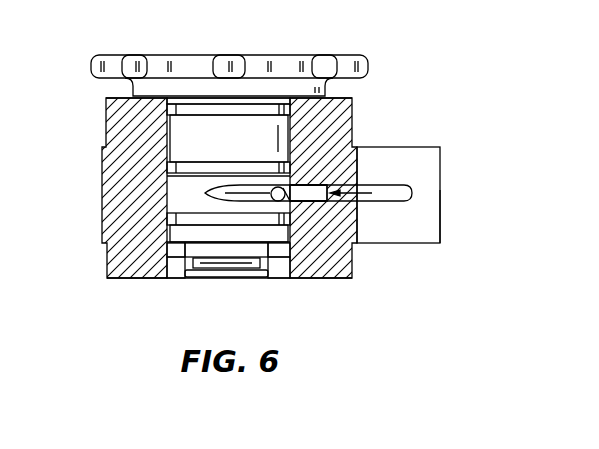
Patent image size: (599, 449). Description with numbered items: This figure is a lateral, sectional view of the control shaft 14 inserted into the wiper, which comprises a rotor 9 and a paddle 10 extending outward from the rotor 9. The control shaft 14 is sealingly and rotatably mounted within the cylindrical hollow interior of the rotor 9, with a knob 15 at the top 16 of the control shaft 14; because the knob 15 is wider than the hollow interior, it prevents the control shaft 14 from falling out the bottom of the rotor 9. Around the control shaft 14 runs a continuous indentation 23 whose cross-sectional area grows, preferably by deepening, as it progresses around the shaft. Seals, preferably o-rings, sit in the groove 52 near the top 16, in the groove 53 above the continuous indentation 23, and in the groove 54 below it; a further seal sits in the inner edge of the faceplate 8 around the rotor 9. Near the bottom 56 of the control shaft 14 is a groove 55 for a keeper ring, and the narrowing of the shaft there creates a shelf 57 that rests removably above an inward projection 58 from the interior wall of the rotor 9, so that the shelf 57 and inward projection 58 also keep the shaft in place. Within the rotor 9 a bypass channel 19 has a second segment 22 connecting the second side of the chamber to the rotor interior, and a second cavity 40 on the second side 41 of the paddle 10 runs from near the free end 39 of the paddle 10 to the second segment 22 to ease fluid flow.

The faceplate 8 is at (87, 193).
The rotor 9 is at (120, 272).
The paddle 10 is at (425, 153).
The control shaft 14 is at (213, 297).
The knob 15 is at (222, 68).
The top of the control shaft 16 is at (262, 98).
The bypass channel 19 is at (357, 149).
The second segment of the channel 22 is at (307, 197).
The continuous indentation 23 is at (300, 170).
The free end of the paddle 39 is at (442, 208).
The second cavity 40 is at (408, 184).
The second side of the paddle 41 is at (427, 222).
The groove 52 is at (166, 108).
The groove 53 is at (166, 168).
The groove 54 is at (167, 224).
The groove for a keeper ring 55 is at (187, 260).
The bottom of the control shaft 56 is at (238, 280).
The shelf 57 is at (168, 239).
The inward projection 58 is at (188, 258).